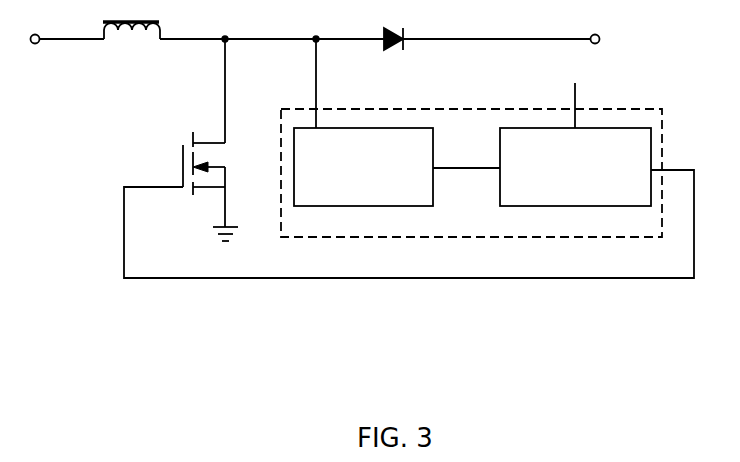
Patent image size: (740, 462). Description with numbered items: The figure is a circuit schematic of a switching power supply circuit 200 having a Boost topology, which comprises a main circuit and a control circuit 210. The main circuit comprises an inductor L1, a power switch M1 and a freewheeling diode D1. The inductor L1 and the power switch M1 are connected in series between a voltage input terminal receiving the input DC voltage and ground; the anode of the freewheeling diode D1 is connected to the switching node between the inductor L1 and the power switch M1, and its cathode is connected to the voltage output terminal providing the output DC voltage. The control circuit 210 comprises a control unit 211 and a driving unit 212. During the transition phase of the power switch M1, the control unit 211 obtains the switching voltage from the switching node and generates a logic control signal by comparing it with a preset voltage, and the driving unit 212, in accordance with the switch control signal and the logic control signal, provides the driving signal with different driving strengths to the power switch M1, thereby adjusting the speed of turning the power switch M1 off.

The switching power supply circuit 200 is at (658, 346).
The control circuit 210 is at (615, 232).
The control unit 211 is at (380, 192).
The driving unit 212 is at (592, 192).
The inductor L1 is at (131, 43).
The freewheeling diode D1 is at (393, 49).
The power switch M1 is at (228, 140).